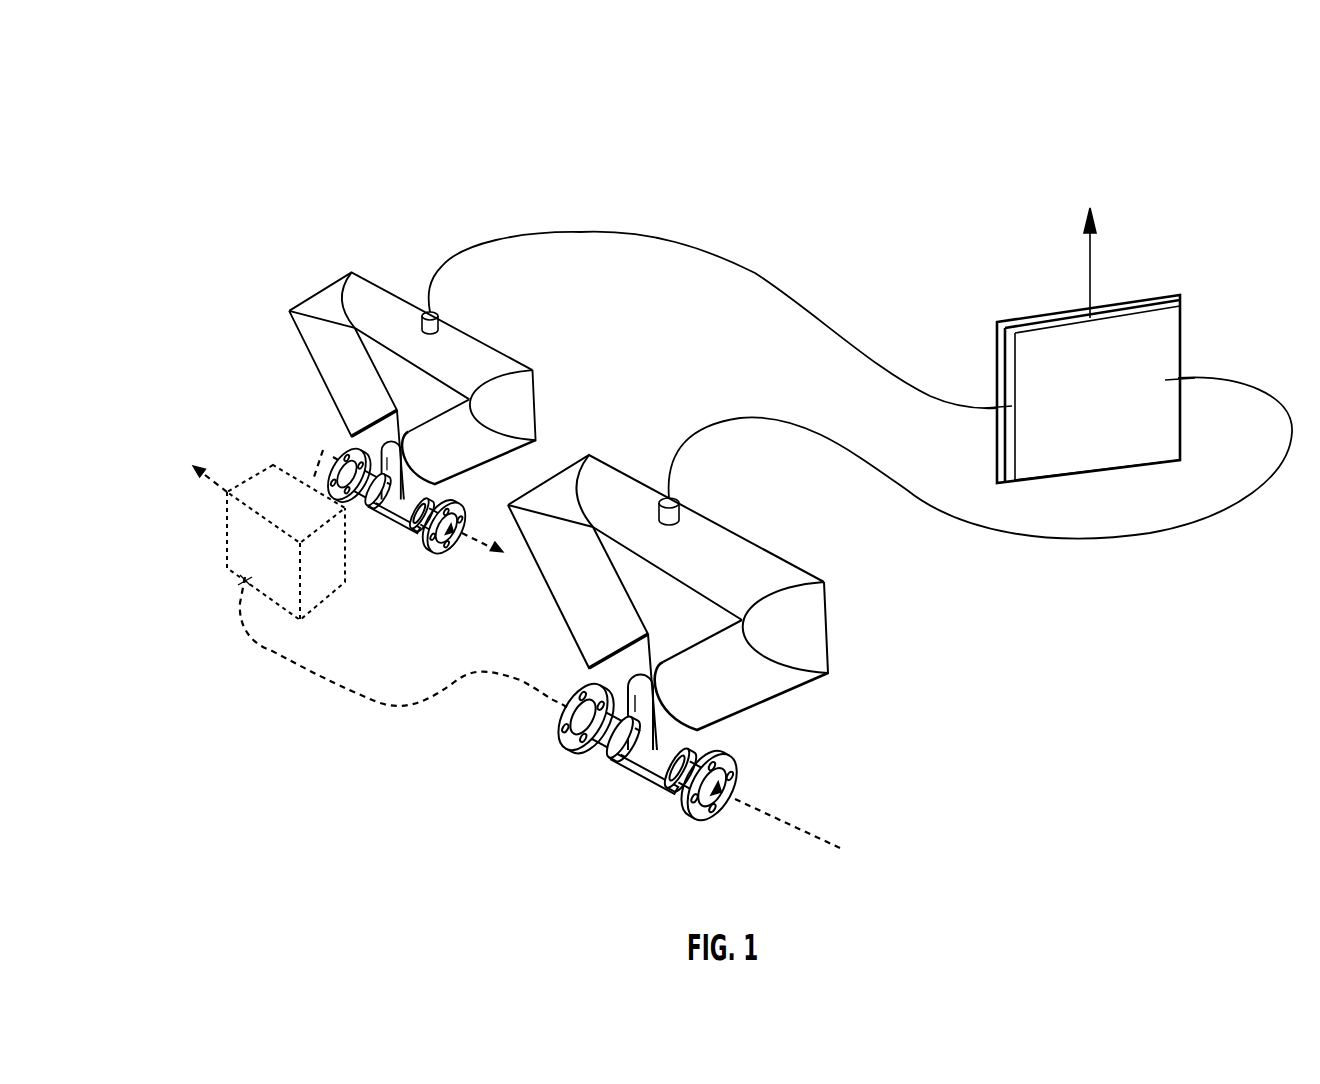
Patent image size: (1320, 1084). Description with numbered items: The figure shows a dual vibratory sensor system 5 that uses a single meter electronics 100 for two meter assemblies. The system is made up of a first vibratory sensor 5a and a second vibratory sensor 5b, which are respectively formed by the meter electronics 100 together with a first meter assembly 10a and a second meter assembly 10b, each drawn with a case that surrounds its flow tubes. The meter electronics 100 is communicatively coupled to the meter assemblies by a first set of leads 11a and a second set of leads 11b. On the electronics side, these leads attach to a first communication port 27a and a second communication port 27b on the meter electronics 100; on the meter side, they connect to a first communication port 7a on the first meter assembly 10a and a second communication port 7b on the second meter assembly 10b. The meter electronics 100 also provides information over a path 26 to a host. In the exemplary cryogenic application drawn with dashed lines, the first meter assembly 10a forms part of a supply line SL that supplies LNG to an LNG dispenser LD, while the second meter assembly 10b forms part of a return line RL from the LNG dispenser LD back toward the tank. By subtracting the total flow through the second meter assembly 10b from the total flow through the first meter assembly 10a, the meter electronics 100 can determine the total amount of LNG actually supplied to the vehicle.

The dual vibratory sensor system 5 is at (317, 86).
The first vibratory sensor 5a is at (1020, 713).
The second vibratory sensor 5b is at (458, 204).
The first meter assembly 10a is at (783, 692).
The second meter assembly 10b is at (313, 302).
The first communication port 7a is at (694, 497).
The second communication port 7b is at (449, 313).
The first set of leads 11a is at (1002, 542).
The second set of leads 11b is at (759, 258).
The meter electronics 100 is at (1152, 288).
The path 26 is at (1076, 290).
The first communication port 27a is at (987, 381).
The second communication port 27b is at (1197, 362).
The return line RL is at (286, 439).
The LNG dispenser LD is at (214, 565).
The supply line SL is at (389, 724).